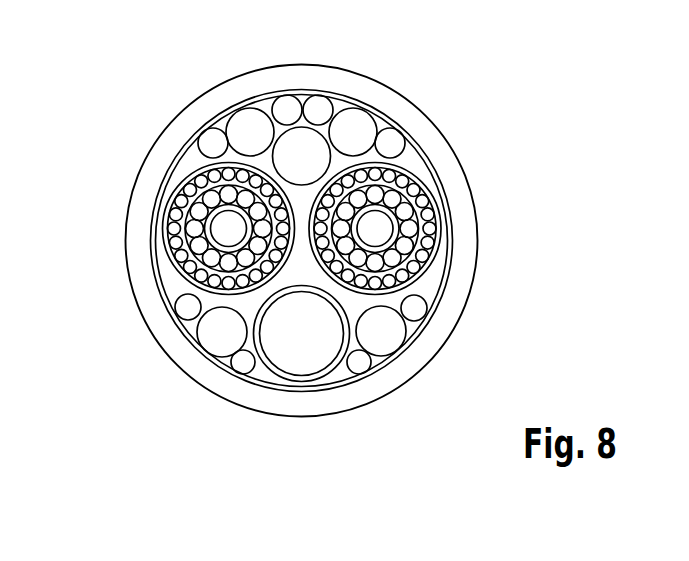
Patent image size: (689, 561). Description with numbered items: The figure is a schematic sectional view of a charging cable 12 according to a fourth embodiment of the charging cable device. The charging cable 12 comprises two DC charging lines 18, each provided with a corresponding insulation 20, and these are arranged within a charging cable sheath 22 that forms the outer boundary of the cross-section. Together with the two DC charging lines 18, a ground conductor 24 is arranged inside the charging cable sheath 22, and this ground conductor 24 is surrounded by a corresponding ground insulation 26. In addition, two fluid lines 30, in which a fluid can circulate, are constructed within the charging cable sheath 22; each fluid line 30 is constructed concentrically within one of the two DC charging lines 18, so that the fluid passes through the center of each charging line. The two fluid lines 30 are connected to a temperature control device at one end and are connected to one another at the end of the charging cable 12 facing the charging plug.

The charging cable 12 is at (128, 127).
The DC charging line 18 is at (197, 210).
The insulation 20 is at (196, 167).
The charging cable sheath 22 is at (413, 362).
The ground conductor 24 is at (232, 370).
The ground insulation 26 is at (283, 347).
The fluid line 30 is at (222, 229).